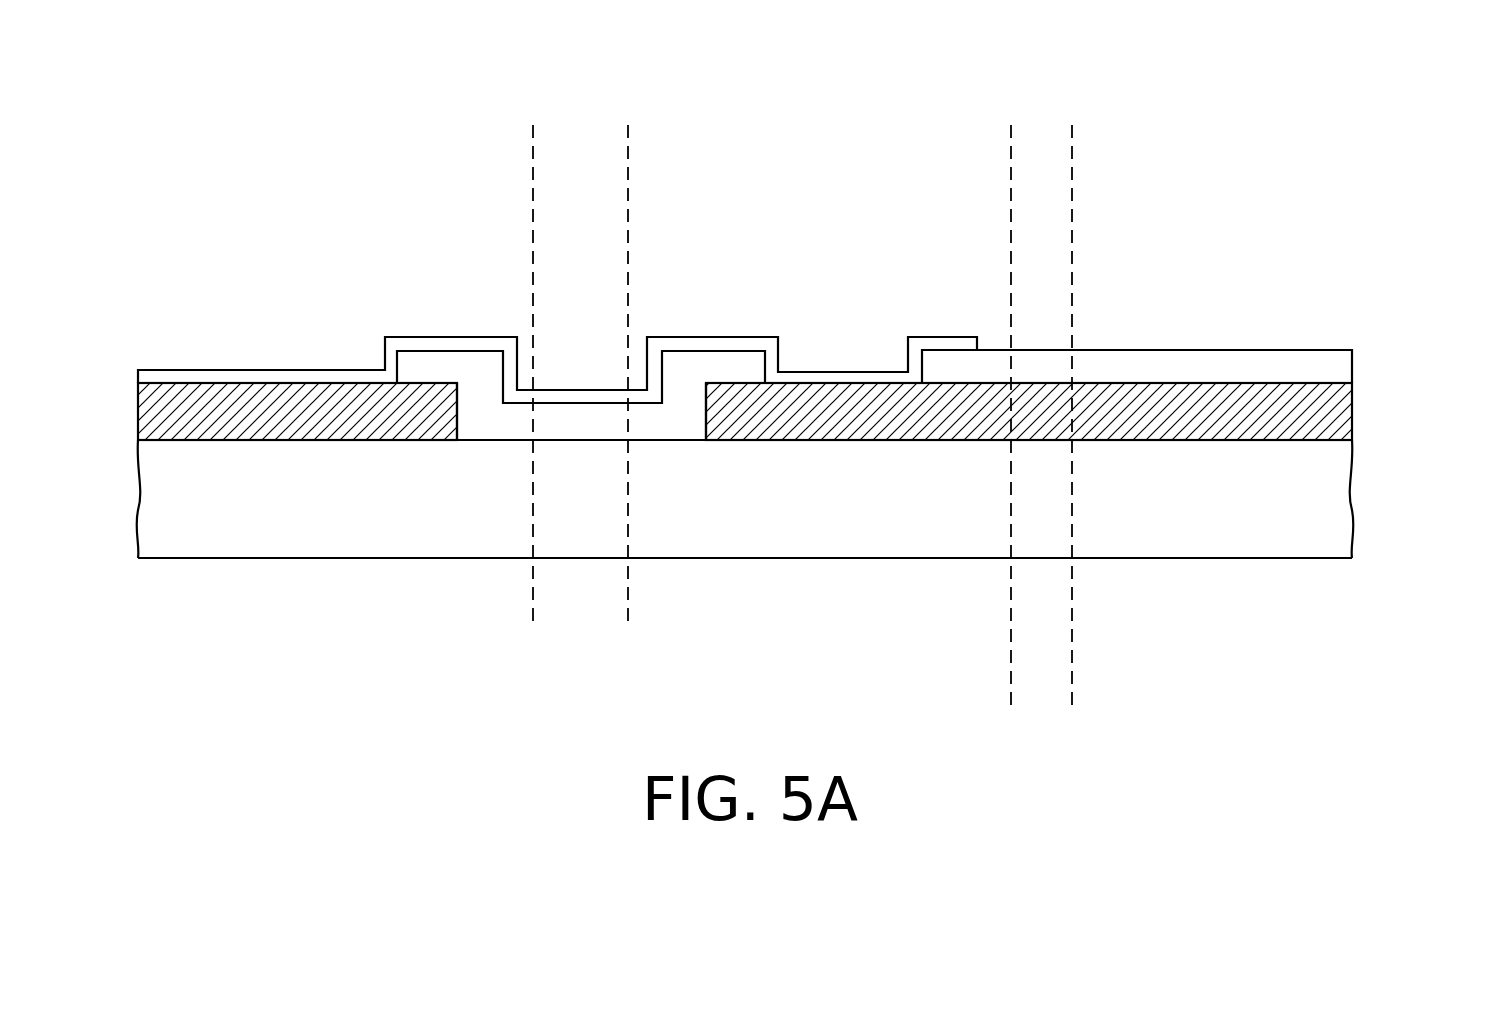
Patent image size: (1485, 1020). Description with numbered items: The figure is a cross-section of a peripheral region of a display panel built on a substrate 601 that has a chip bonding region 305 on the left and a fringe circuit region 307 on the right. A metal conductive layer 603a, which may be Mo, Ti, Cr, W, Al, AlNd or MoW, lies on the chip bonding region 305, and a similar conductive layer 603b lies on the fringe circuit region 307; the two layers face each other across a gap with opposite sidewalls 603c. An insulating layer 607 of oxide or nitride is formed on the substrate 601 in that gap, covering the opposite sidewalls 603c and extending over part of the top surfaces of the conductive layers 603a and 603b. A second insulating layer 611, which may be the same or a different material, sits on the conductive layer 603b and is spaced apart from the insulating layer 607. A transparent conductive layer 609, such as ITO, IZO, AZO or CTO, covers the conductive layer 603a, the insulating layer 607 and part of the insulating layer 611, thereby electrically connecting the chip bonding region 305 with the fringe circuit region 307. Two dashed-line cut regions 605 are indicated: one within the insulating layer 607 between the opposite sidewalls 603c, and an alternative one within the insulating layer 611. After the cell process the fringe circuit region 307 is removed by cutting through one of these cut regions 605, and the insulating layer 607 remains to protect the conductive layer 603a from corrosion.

The chip bonding region 305 is at (272, 278).
The fringe circuit region 307 is at (1303, 278).
The substrate 601 is at (1202, 530).
The conductive layer 603a is at (297, 420).
The conductive layer 603b is at (840, 425).
The opposite sidewalls 603c is at (457, 420).
The cut region 605 is at (532, 110).
The insulating layer 607 is at (438, 375).
The conductive layer 609 is at (711, 343).
The insulating layer 611 is at (1100, 367).